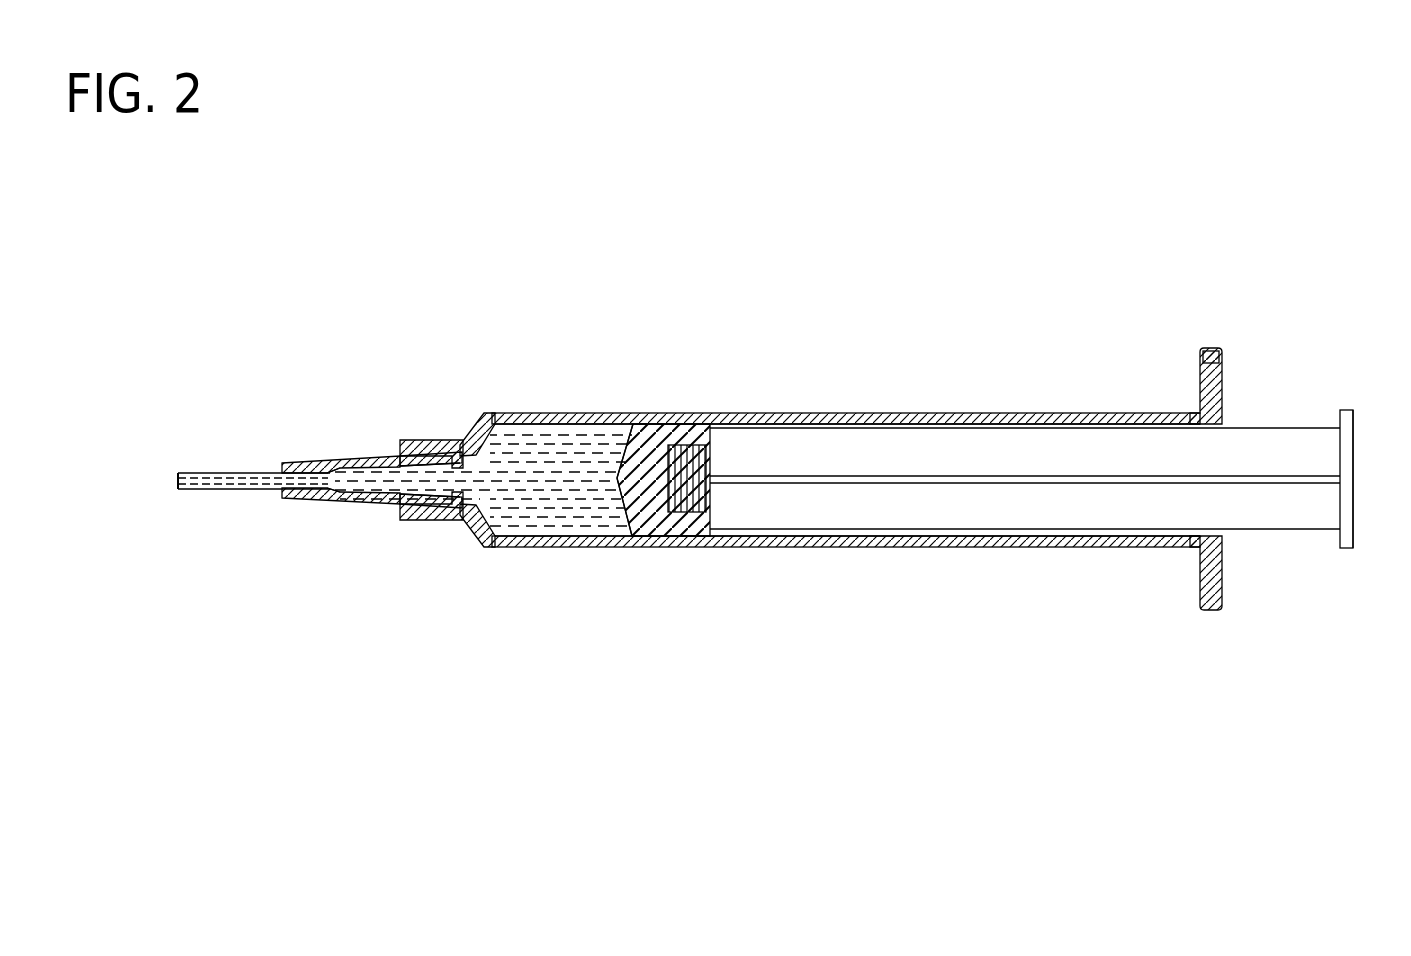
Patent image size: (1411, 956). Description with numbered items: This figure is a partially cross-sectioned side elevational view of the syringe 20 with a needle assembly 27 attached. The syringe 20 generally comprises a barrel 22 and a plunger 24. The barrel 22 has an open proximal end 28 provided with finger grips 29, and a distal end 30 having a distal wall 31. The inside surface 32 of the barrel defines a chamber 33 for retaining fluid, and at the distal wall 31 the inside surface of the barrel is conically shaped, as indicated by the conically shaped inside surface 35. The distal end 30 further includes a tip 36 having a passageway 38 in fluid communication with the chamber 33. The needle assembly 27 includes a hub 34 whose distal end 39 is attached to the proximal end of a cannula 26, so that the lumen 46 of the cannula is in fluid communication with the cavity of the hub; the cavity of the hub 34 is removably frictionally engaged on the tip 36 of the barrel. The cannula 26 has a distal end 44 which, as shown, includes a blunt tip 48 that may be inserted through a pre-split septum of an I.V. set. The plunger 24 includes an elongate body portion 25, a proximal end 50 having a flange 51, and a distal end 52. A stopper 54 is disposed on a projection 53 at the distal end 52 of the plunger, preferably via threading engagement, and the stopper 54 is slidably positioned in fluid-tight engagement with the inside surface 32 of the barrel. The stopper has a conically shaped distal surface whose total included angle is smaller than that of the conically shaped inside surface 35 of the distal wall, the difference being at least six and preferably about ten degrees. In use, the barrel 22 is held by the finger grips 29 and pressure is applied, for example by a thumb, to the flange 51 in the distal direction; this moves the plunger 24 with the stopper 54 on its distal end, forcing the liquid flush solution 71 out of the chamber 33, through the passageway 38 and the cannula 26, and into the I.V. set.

The syringe 20 is at (743, 459).
The barrel 22 is at (811, 449).
The plunger 24 is at (905, 432).
The elongate body portion 25 is at (1054, 490).
The cannula 26 is at (275, 491).
The needle assembly 27 is at (366, 491).
The open proximal end 28 is at (1160, 410).
The finger grips 29 is at (1210, 350).
The distal end 30 is at (497, 548).
The distal wall 31 is at (470, 425).
The inside surface 32 is at (541, 445).
The chamber 33 is at (570, 480).
The hub 34 is at (345, 502).
The conically shaped inside surface 35 is at (520, 548).
The tip 36 is at (392, 520).
The passageway 38 is at (408, 458).
The distal end 39 is at (295, 500).
The distal end 44 is at (205, 473).
The lumen 46 is at (250, 473).
The blunt tip 48 is at (185, 474).
The proximal end 50 is at (1307, 537).
The flange 51 is at (1348, 410).
The distal end 52 is at (682, 500).
The projection 53 is at (662, 440).
The stopper 54 is at (693, 520).
The flush solution 71 is at (625, 540).